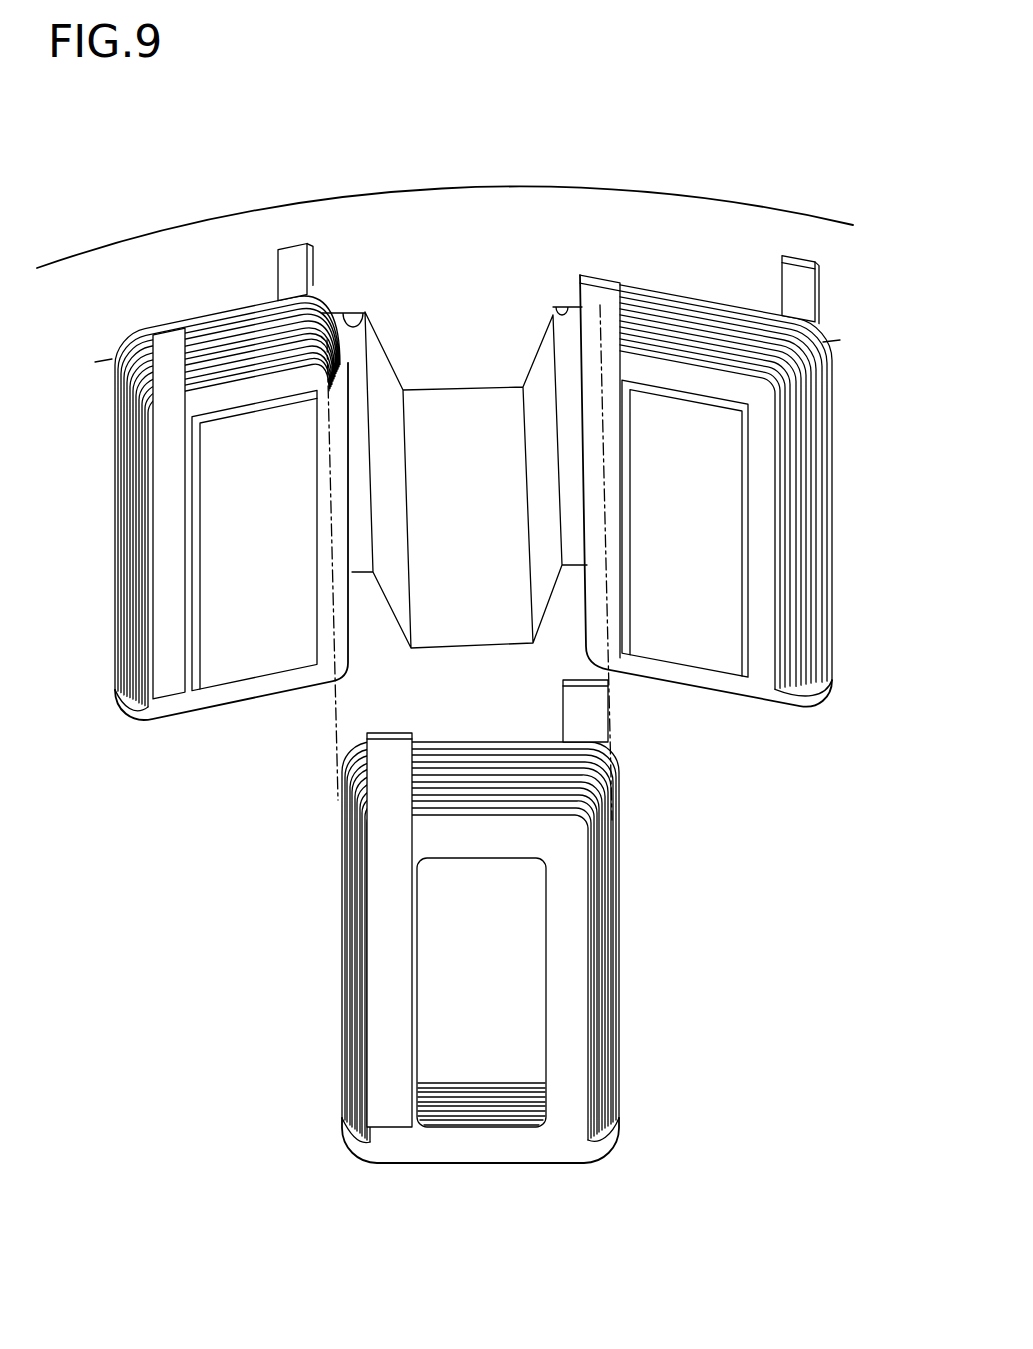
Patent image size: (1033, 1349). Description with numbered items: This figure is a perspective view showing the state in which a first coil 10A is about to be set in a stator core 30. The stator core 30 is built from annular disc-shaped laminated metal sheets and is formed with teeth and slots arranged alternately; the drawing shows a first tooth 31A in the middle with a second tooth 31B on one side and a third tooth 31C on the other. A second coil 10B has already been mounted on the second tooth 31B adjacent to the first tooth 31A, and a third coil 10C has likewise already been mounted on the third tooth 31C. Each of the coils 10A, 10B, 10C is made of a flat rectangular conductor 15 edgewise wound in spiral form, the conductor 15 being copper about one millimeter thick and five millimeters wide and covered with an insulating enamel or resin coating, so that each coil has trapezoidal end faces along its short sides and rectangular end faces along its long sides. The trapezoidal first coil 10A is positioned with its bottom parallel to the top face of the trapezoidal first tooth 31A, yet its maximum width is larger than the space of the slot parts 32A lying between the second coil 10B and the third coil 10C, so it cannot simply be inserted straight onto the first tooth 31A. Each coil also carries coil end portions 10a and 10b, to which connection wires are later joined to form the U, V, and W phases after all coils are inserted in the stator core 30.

The stator core 30 is at (465, 206).
The first tooth 31A is at (493, 374).
The second tooth 31B is at (290, 544).
The third tooth 31C is at (700, 544).
The slot part 32A is at (363, 312).
The first coil 10A is at (628, 1005).
The second coil 10B is at (142, 711).
The third coil 10C is at (750, 700).
The coil end portion 10a is at (392, 748).
The coil end portion 10b is at (572, 700).
The flat rectangular conductor 15 is at (387, 988).